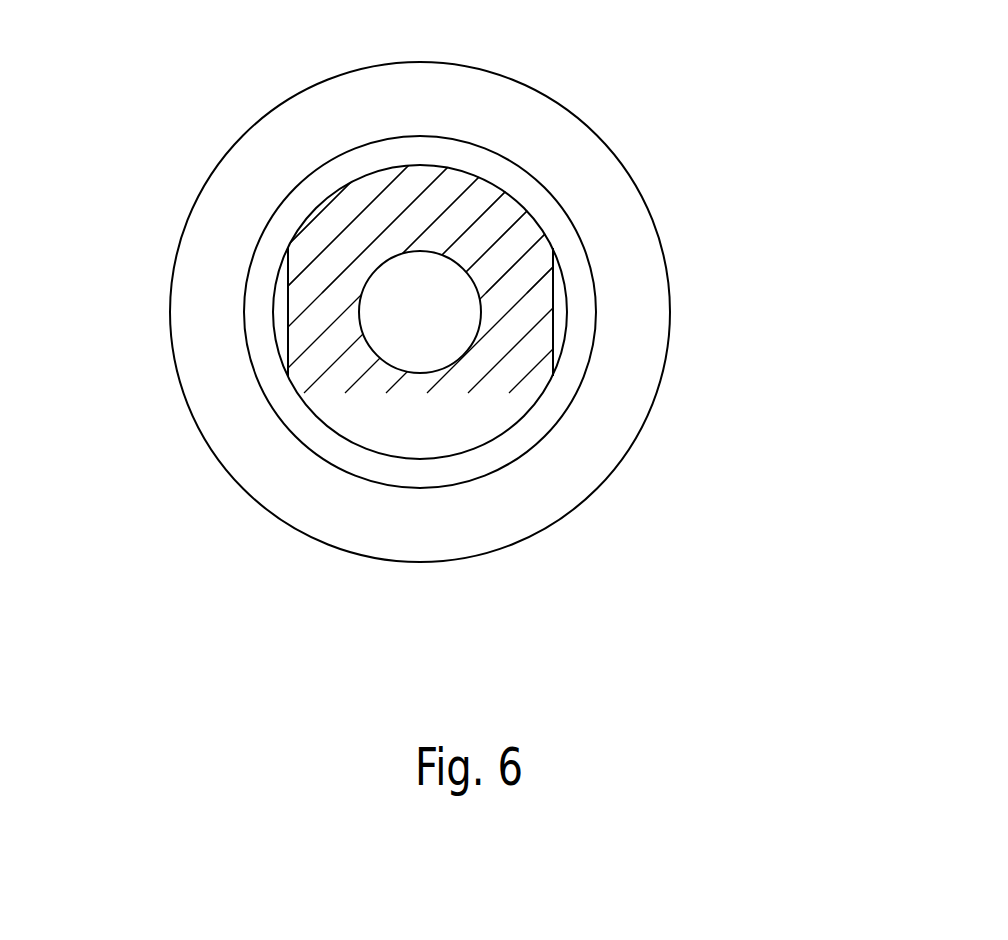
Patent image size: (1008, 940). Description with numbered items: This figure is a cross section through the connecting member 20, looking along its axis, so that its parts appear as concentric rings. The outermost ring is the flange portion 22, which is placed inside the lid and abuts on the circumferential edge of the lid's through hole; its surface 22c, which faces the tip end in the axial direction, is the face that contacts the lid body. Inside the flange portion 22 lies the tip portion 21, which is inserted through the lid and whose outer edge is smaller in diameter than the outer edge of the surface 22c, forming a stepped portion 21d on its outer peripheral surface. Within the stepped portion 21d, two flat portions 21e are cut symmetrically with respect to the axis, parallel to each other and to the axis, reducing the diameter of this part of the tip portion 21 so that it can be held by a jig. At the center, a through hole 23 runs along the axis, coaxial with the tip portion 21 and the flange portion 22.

The connecting member 20 is at (531, 294).
The surface of the flange portion 22c is at (552, 135).
The flange portion 22 is at (437, 290).
The stepped portion 21d is at (553, 212).
The flat portion 21e is at (286, 300).
The tip portion 21 is at (531, 196).
The through hole 23 is at (474, 332).